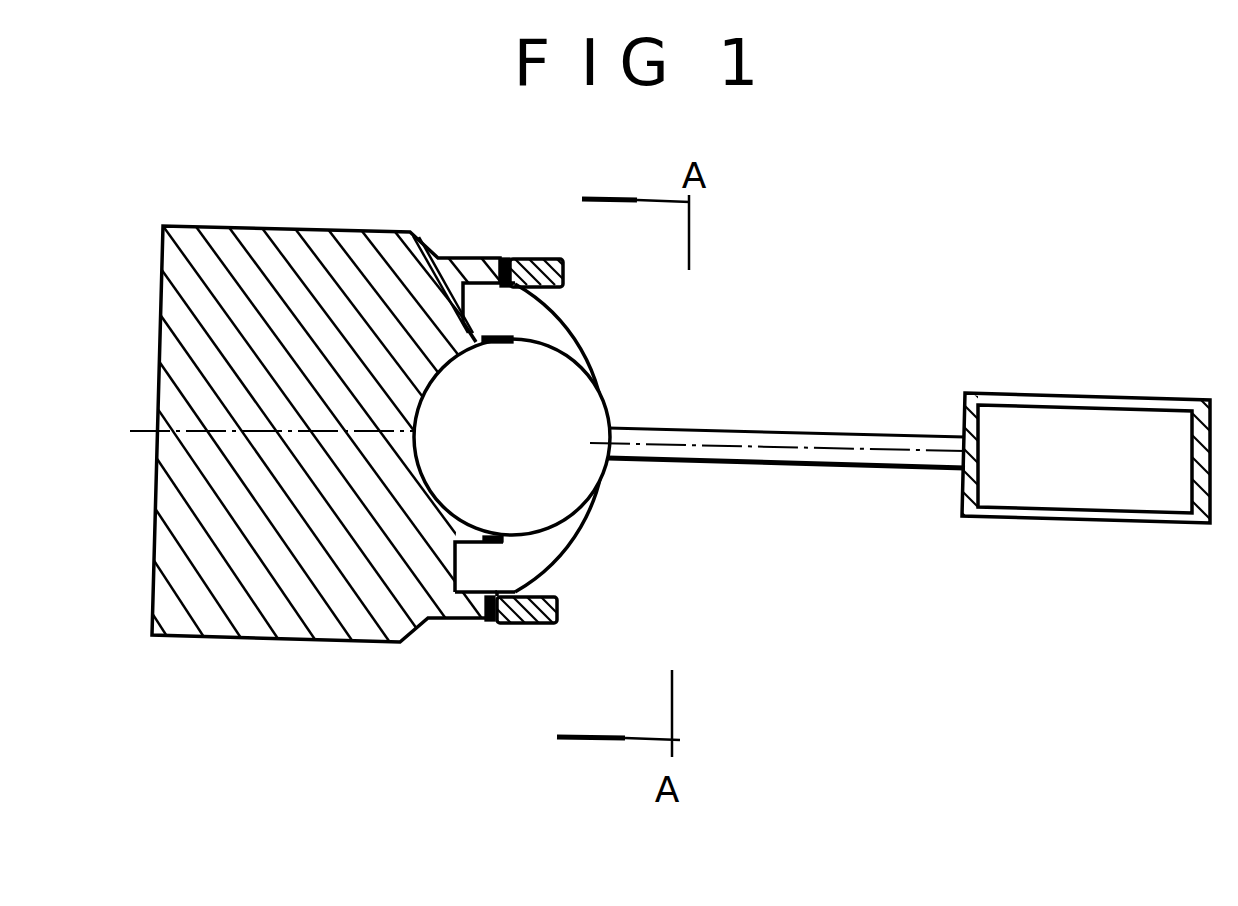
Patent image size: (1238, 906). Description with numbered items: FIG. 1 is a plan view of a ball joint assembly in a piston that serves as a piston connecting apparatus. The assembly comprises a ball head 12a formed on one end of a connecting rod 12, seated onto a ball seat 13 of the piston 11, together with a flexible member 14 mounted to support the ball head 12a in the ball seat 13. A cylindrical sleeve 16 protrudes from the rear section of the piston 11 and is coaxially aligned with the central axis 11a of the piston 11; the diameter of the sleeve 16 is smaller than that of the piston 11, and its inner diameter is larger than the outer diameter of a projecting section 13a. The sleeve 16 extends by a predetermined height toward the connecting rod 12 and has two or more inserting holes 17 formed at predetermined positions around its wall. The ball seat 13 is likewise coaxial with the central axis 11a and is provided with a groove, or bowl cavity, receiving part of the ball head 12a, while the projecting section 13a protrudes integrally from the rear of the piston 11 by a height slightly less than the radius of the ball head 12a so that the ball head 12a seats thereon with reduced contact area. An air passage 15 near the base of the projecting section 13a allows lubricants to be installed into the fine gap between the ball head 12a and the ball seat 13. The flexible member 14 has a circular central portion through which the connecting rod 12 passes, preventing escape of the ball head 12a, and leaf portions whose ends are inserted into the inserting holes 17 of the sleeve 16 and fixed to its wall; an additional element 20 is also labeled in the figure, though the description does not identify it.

The piston 11 is at (243, 250).
The central axis 11a is at (328, 426).
The connecting rod 12 is at (852, 438).
The ball head 12a is at (578, 403).
The ball seat 13 is at (448, 521).
The projecting section 13a is at (507, 540).
The flexible member 14 is at (583, 535).
The air passage 15 is at (413, 238).
The cylindrical sleeve 16 is at (549, 612).
The inserting holes 17 is at (500, 262).
The upper nut 20 is at (538, 262).